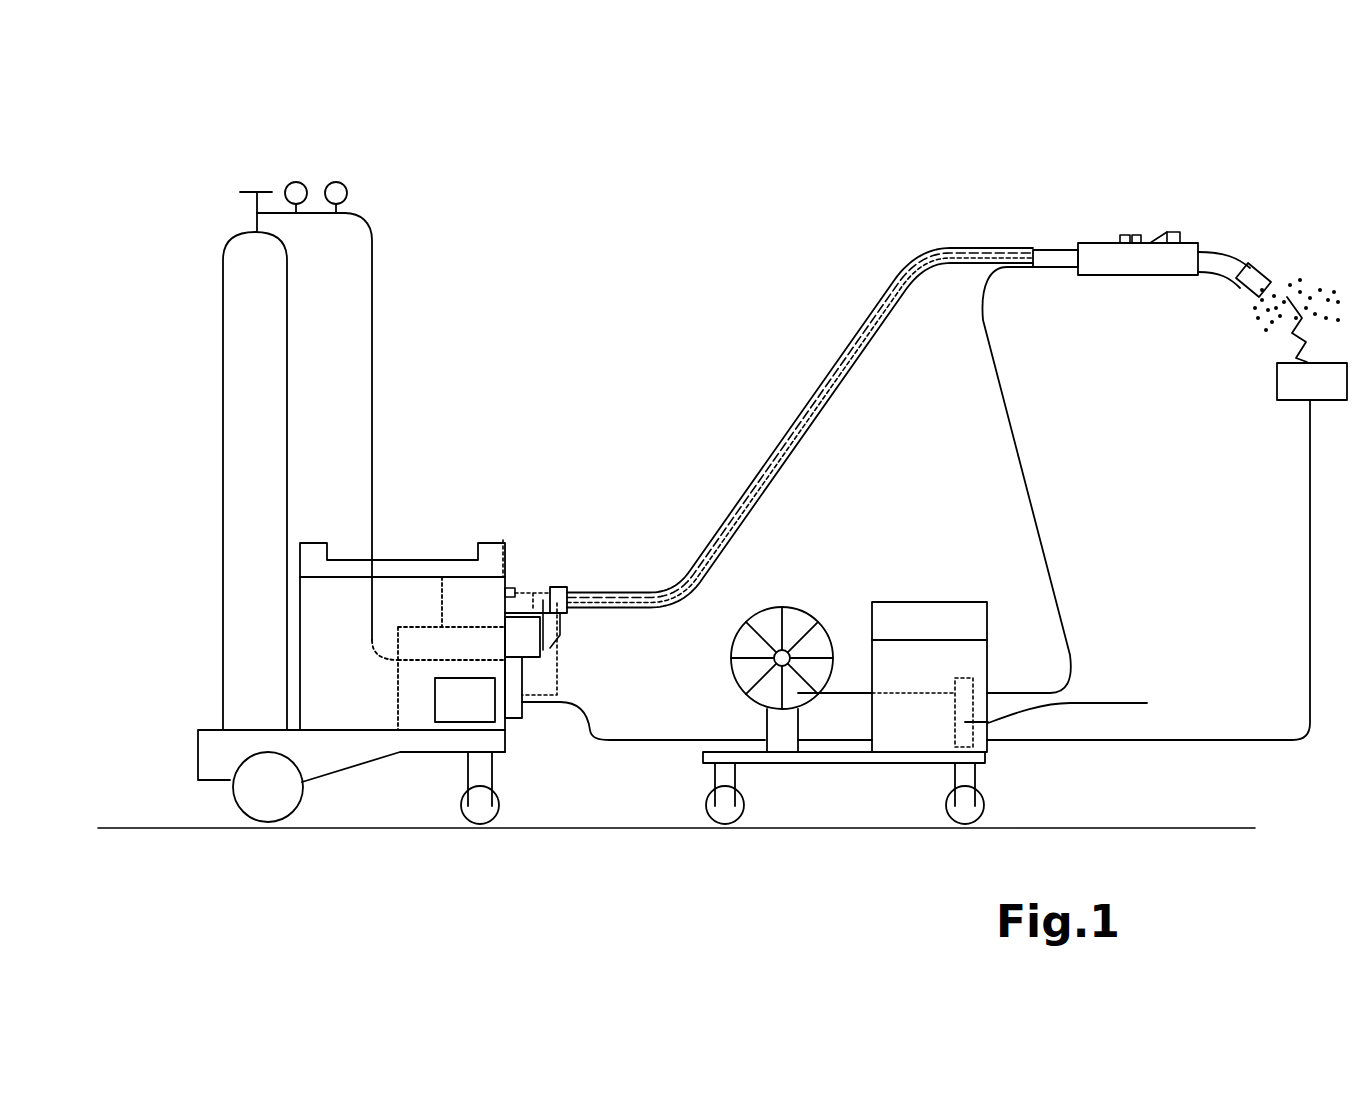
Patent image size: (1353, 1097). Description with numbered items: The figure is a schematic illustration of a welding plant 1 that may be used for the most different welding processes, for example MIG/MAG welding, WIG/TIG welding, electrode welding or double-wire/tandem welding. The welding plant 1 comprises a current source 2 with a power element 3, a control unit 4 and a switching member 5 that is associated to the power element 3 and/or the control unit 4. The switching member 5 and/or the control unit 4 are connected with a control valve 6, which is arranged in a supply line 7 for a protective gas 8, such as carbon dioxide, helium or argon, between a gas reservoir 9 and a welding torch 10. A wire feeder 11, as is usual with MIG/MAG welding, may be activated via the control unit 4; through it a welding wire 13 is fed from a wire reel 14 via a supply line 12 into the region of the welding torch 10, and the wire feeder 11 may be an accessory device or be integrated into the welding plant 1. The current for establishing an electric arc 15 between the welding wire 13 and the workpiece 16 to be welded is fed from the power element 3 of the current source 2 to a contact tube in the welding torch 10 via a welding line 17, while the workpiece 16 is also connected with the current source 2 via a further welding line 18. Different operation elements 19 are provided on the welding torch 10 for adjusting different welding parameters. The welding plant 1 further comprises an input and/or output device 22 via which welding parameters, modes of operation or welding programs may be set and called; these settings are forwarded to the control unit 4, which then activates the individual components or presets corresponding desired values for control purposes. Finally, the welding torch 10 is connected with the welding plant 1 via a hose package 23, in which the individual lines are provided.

The welding plant 1 is at (178, 175).
The current source 2 is at (455, 425).
The power element 3 is at (457, 707).
The control unit 4 is at (398, 692).
The switching member 5 is at (523, 735).
The control valve 6 is at (518, 673).
The supply line 7 is at (958, 266).
The protective gas 8 is at (1281, 250).
The gas reservoir 9 is at (253, 317).
The welding torch 10 is at (1188, 205).
The wire feeder 11 is at (1075, 708).
The supply line 12 is at (1035, 513).
The welding wire 13 is at (897, 695).
The wire reel 14 is at (792, 622).
The electric arc 15 is at (1283, 345).
The workpiece 16 is at (1320, 380).
The welding line 17 is at (875, 318).
The further welding line 18 is at (1316, 600).
The operation elements 19 is at (1167, 232).
The input and/or output device 22 is at (504, 540).
The hose package 23 is at (905, 232).